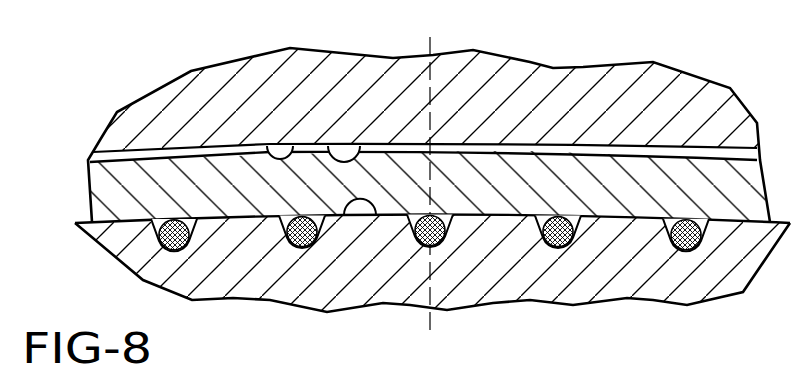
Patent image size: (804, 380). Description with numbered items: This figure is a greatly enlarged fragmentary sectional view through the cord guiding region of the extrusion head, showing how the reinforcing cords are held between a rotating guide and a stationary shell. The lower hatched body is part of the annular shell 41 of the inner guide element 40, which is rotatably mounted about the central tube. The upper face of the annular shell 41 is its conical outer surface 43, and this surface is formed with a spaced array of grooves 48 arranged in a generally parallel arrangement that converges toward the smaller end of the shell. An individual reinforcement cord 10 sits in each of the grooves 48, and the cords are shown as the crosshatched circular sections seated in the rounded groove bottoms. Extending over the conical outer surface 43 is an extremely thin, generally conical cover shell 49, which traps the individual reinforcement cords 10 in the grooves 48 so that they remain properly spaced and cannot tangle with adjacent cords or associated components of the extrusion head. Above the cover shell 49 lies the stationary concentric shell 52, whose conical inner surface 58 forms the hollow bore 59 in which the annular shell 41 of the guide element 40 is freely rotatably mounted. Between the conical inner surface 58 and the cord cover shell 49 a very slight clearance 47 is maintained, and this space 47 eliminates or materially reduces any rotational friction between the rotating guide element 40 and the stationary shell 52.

The reinforcement cords 10 is at (300, 234).
The inner guide element 40 is at (435, 282).
The annular shell 41 is at (495, 278).
The conical outer surface 43 is at (347, 205).
The clearance 47 is at (596, 150).
The grooves 48 is at (576, 218).
The cover shell 49 is at (198, 170).
The concentric shell 52 is at (234, 93).
The conical inner surface 58 is at (263, 147).
The hollow bore 59 is at (330, 147).